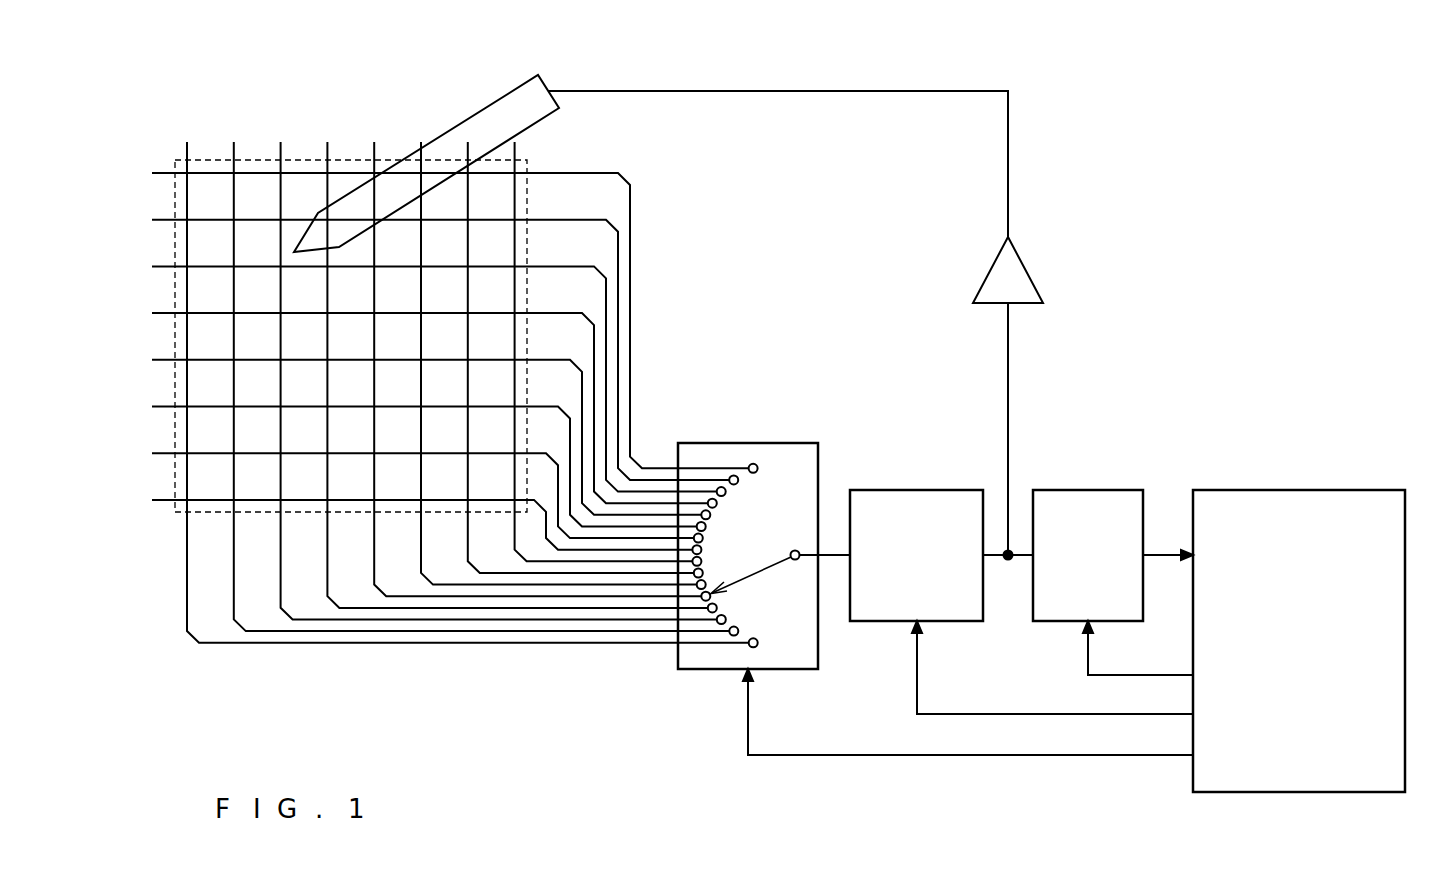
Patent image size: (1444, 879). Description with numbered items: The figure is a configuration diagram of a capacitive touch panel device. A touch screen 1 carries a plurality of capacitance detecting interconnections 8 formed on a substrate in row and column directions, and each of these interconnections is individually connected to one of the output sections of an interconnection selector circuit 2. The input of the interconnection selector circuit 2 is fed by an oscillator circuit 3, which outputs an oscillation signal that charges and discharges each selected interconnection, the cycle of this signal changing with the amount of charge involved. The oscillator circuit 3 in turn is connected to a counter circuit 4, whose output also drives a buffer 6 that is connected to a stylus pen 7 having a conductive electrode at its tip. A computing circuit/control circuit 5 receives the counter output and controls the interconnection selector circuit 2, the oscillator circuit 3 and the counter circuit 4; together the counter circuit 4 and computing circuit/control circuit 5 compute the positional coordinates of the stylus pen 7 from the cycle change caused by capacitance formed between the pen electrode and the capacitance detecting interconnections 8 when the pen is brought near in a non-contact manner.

The touch screen 1 is at (208, 160).
The interconnection selector circuit 2 is at (748, 443).
The oscillator circuit 3 is at (900, 490).
The counter circuit 4 is at (1085, 490).
The computing circuit/control circuit 5 is at (1255, 490).
The buffer 6 is at (1027, 268).
The stylus pen 7 is at (460, 122).
The capacitance detecting interconnections 8 is at (282, 168).